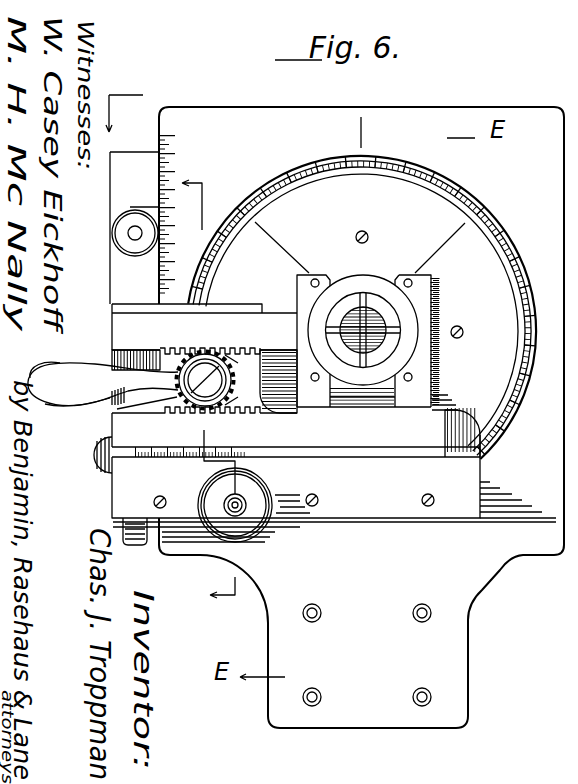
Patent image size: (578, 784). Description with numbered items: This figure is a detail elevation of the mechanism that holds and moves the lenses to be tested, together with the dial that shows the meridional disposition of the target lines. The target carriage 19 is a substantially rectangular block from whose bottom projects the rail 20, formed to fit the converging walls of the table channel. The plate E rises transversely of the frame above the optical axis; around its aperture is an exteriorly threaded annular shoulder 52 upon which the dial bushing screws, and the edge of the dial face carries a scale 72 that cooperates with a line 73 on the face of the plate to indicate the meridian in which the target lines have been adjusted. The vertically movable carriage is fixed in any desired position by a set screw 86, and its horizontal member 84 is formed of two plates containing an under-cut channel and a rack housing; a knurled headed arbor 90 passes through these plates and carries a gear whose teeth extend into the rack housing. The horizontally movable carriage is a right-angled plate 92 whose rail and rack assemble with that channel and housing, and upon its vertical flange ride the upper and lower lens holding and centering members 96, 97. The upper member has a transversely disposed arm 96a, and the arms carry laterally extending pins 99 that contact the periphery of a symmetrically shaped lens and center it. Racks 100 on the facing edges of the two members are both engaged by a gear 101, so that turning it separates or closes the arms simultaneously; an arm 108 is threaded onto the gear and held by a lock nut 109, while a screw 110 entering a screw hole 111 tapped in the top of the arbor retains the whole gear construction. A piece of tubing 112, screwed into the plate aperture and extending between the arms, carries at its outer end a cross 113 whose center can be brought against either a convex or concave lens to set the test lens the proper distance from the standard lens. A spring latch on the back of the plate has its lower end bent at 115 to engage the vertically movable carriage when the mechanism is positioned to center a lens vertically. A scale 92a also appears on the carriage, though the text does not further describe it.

The carriage 19 is at (205, 378).
The rail 20 is at (124, 123).
The annular shoulder 52 is at (362, 307).
The scale 72 is at (483, 207).
The line 73 is at (361, 133).
The horizontal member 84 is at (334, 488).
The set screw 86 is at (125, 240).
The knurled headed arbor 90 is at (265, 502).
The plate 92 is at (145, 215).
The graduated scale on carriage 92a is at (420, 367).
The upper lens holding and centering member 96 is at (204, 329).
The transversely disposed arm 96a is at (348, 341).
The lower lens holding and centering member 97 is at (296, 445).
The pins 99 is at (313, 398).
The racks 100 is at (210, 414).
The gear 101 is at (234, 382).
The arm 108 is at (70, 378).
The lock nut 109 is at (112, 403).
The screw 110 is at (199, 370).
The screw hole 111 is at (95, 460).
The tubing 112 is at (385, 352).
The cross 113 is at (378, 288).
The bent end 115 is at (135, 517).